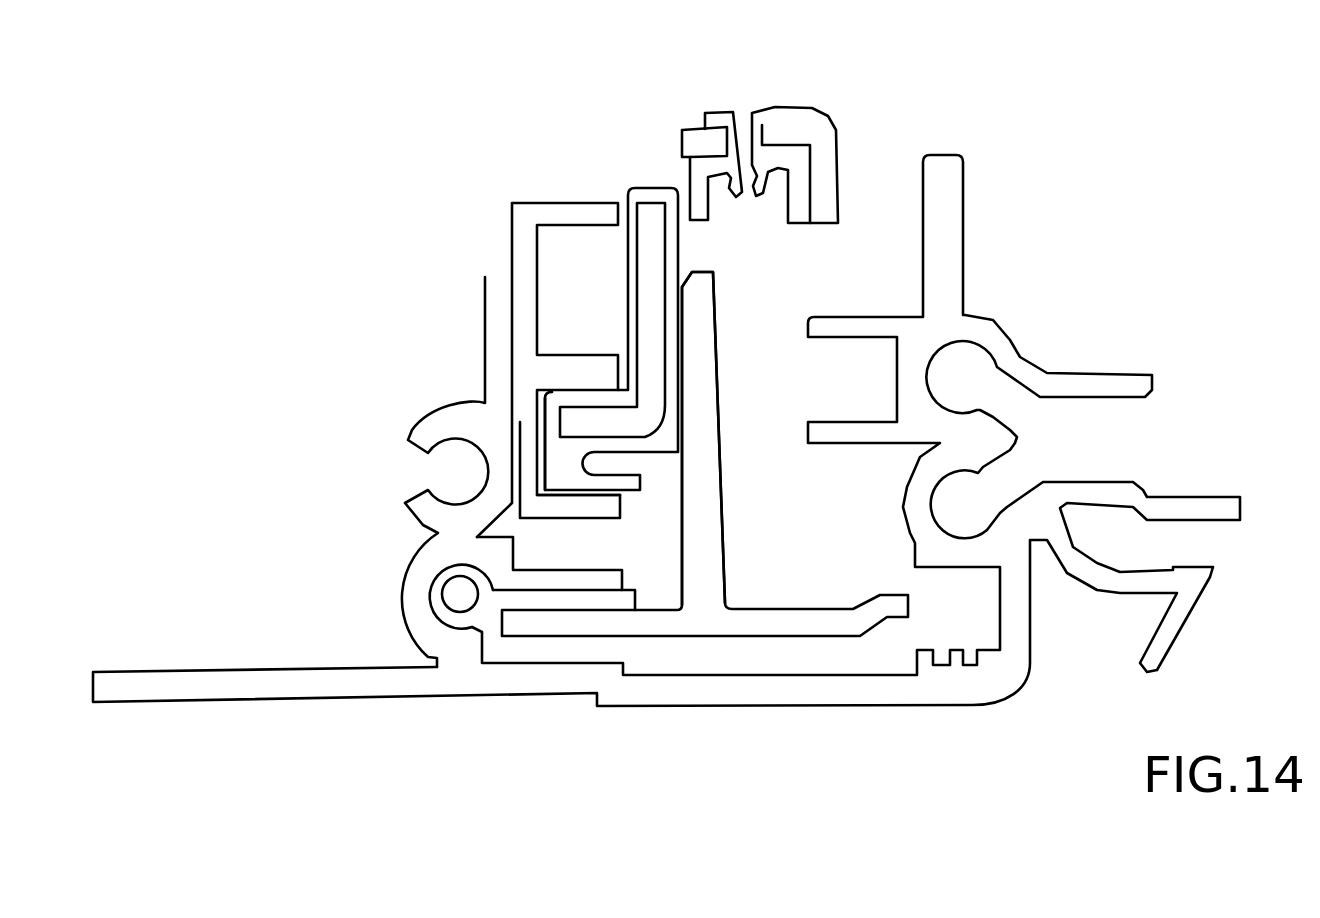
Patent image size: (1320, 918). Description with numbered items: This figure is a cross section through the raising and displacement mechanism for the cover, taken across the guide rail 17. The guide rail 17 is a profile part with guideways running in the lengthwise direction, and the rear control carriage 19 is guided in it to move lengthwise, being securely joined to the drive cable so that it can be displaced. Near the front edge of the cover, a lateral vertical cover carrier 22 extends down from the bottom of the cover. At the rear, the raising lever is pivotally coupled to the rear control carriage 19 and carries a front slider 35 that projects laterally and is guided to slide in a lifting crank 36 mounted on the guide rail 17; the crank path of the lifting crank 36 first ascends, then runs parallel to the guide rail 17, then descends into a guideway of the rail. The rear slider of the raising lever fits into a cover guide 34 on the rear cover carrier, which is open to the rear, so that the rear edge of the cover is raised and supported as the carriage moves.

The guide rail 17 is at (557, 675).
The rear control carriage 19 is at (700, 380).
The cover carrier 22 is at (693, 188).
The cover guide 34 is at (800, 130).
The front slider 35 is at (568, 458).
The lifting crank 36 is at (515, 207).